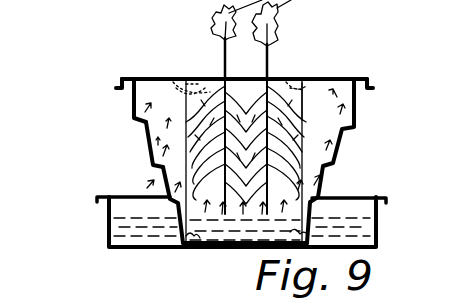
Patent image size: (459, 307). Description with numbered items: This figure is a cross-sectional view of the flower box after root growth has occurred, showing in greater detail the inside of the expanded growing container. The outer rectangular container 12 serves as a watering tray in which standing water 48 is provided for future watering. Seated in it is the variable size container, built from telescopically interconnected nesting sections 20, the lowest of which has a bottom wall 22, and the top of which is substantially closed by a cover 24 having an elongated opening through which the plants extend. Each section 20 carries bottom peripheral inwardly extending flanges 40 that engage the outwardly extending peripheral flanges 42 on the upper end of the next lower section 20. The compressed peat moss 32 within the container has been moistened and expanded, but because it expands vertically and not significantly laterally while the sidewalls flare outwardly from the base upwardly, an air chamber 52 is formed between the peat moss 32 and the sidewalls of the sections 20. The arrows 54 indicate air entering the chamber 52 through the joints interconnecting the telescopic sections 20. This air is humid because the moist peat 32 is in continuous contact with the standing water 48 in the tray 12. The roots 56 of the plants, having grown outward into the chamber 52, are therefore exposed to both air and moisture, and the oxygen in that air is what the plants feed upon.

The container 12 is at (378, 223).
The telescopically interconnected nesting sections 20 is at (247, 161).
The bottom wall 22 is at (262, 231).
The cover 24 is at (150, 77).
The compressed peat moss 32 is at (216, 78).
The bottom peripheral inwardly extending flanges 40 is at (145, 133).
The outwardly extending peripheral flanges 42 is at (134, 114).
The water 48 is at (358, 222).
The air chamber 52 is at (342, 95).
The arrows 54 is at (137, 143).
The roots 56 is at (173, 79).